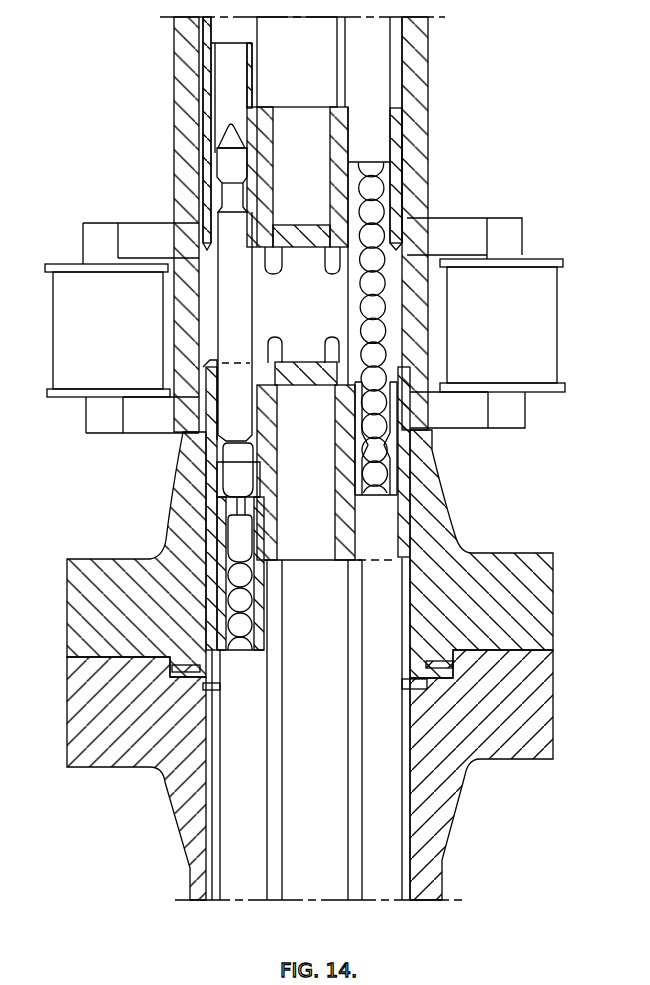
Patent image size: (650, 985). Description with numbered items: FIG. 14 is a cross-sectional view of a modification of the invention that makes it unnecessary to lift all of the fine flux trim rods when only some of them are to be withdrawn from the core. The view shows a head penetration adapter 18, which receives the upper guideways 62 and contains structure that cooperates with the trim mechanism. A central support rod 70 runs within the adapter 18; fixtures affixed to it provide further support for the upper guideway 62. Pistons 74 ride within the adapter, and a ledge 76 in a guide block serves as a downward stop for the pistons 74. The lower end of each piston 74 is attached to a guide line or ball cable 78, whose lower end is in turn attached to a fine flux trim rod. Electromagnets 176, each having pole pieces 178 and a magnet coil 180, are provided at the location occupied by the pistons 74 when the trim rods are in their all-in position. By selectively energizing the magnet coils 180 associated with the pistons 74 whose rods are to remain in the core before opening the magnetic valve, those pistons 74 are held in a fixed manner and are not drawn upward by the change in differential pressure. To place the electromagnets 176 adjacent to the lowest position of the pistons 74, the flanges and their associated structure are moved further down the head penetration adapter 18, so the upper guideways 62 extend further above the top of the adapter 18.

The head penetration adapter 18 is at (455, 817).
The upper guideway 62 is at (370, 730).
The central support rod 70 is at (342, 850).
The piston 74 is at (245, 310).
The ledge 76 is at (220, 450).
The ball cable 78 is at (360, 310).
The electromagnet 176 is at (53, 358).
The pole piece 178 is at (135, 232).
The magnet coil 180 is at (62, 315).